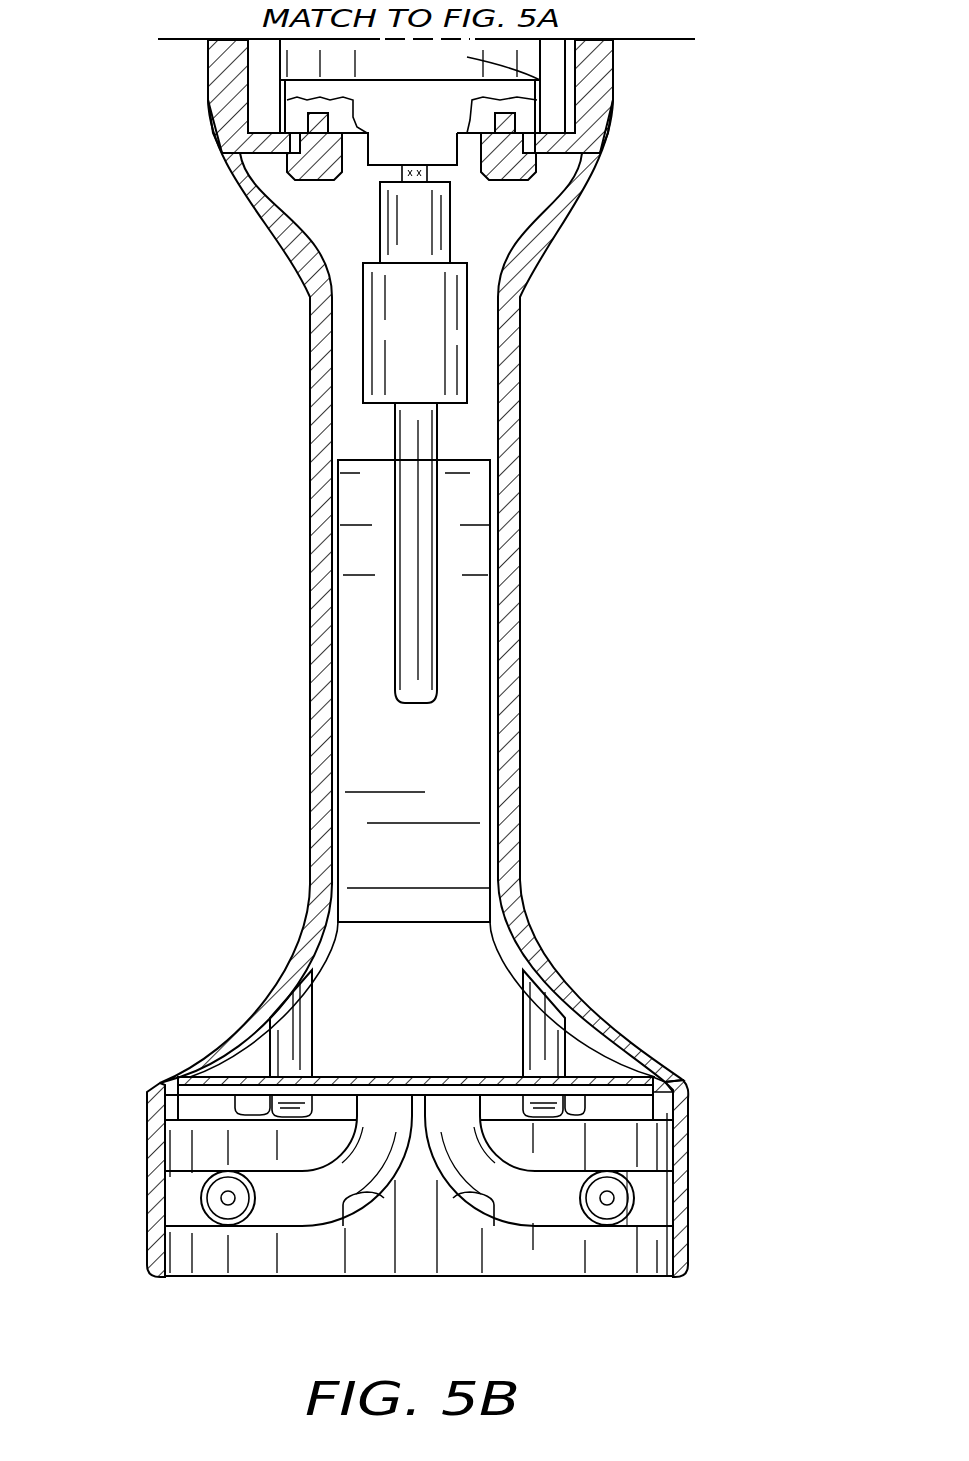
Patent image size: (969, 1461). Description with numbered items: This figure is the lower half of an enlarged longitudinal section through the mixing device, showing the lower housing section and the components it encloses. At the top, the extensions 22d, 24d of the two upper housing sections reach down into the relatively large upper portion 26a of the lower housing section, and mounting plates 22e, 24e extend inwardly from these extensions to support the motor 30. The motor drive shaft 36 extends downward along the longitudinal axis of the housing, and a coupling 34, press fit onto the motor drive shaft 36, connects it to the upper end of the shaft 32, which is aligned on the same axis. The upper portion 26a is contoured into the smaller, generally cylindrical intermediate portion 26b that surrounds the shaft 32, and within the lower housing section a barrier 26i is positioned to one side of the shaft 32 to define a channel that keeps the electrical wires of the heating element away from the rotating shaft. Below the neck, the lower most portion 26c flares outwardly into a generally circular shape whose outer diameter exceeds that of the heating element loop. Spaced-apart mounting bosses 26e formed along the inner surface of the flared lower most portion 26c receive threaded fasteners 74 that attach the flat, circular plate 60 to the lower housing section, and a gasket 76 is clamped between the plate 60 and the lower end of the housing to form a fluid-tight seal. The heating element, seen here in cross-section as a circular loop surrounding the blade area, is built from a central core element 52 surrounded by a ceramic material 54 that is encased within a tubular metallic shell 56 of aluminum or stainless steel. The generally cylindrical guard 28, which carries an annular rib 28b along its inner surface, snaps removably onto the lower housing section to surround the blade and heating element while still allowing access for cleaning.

The extension 22d is at (597, 100).
The mounting plate 22e is at (553, 143).
The extension 24d is at (240, 80).
The mounting plate 24e is at (270, 147).
The upper portion 26a is at (597, 133).
The intermediate portion 26b is at (310, 530).
The lower most portion 26c is at (560, 987).
The mounting bosses 26e is at (407, 980).
The barrier 26i is at (427, 740).
The guard 28 is at (688, 1212).
The base bracket 28b is at (647, 1190).
The motor 30 is at (617, 66).
The shaft 32 is at (410, 517).
The coupling 34 is at (433, 350).
The motor drive shaft 36 is at (400, 172).
The central core element 52 is at (200, 1212).
The ceramic material 54 is at (218, 1198).
The tubular metallic shell 56 is at (296, 1196).
The plate 60 is at (683, 1110).
The threaded fasteners 74 is at (260, 1113).
The gasket 76 is at (597, 1082).